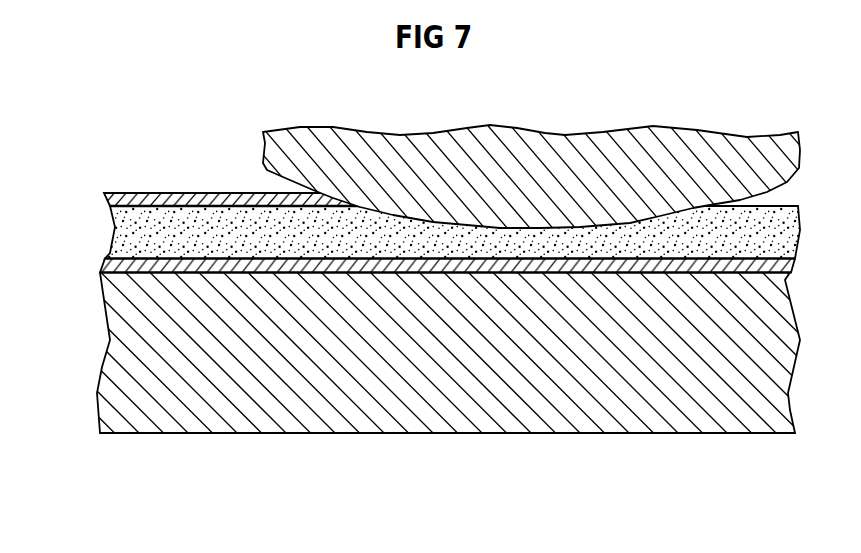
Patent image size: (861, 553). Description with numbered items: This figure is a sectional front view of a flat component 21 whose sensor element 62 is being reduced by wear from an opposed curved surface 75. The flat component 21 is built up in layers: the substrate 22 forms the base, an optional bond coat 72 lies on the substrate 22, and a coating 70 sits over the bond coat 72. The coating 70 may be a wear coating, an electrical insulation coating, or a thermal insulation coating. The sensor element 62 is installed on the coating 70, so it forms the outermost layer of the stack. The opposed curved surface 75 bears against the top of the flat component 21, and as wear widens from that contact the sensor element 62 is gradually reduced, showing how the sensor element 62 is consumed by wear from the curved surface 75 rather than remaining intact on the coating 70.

The flat component 21 is at (292, 456).
The substrate 22 is at (118, 378).
The sensor element 62 is at (157, 200).
The coating 70 is at (118, 226).
The bond coat 72 is at (108, 266).
The opposed curved surface 75 is at (529, 195).